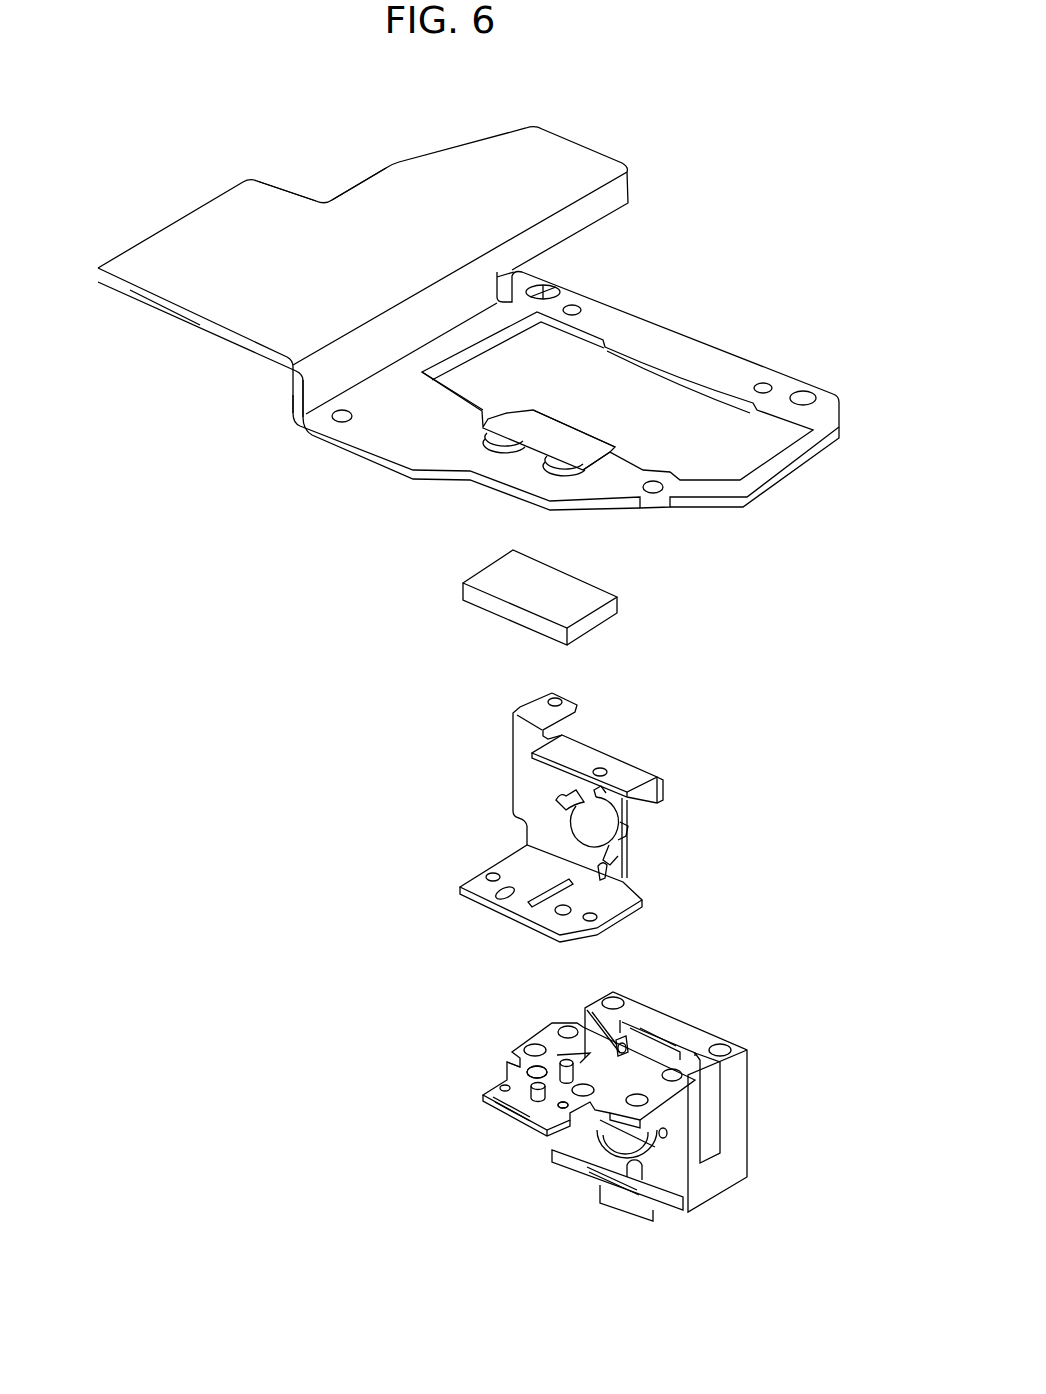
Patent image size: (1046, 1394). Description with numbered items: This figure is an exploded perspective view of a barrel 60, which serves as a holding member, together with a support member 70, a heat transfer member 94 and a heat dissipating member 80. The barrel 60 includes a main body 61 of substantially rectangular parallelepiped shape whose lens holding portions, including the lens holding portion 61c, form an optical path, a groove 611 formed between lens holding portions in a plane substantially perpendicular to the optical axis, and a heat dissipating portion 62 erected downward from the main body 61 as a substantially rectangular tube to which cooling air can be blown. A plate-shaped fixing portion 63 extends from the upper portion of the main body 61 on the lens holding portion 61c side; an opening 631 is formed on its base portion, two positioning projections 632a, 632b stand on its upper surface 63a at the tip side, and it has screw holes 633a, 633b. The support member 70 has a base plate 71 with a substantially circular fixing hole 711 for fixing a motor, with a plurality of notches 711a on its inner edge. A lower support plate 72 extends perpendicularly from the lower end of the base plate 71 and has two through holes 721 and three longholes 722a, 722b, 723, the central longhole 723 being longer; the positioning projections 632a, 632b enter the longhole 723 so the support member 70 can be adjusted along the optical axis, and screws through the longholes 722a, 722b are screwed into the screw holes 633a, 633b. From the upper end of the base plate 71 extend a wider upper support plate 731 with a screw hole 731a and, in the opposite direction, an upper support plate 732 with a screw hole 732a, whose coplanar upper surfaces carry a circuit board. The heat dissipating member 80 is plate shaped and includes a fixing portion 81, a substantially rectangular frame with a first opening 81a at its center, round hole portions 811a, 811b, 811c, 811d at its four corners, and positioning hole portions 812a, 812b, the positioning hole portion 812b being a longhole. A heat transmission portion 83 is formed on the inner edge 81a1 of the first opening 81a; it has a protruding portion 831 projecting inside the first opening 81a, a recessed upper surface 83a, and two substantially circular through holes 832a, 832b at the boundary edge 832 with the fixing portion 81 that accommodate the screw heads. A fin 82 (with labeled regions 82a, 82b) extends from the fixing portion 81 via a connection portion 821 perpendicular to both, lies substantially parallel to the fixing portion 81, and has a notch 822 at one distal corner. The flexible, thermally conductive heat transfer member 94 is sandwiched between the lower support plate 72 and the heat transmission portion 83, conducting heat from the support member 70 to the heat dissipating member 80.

The heat dissipating member 80 is at (262, 158).
The fin 82 is at (207, 323).
The plate surface 82a is at (160, 316).
The plate tab portion 82b is at (368, 197).
The notch 822 is at (312, 168).
The connection portion 821 is at (294, 388).
The round hole portion 811a is at (294, 392).
The fixing portion 81 is at (367, 447).
The first opening 81a is at (628, 378).
The inner edge 81a1 is at (453, 395).
The round hole portion 811b is at (655, 495).
The round hole portion 811c is at (765, 385).
The round hole portion 811d is at (580, 305).
The positioning hole 812a is at (808, 393).
The positioning hole portion 812b is at (562, 290).
The heat transmission portion 83 is at (580, 432).
The upper surface 83a is at (553, 420).
The protruding portion 831 is at (640, 452).
The boundary edge 832 is at (503, 462).
The first notch 832a is at (530, 450).
The through hole 832b is at (560, 463).
The heat transfer member 94 is at (447, 605).
The support member 70 is at (393, 757).
The base plate 71 is at (518, 768).
The fixing hole 711 is at (628, 835).
The notches 711a is at (555, 798).
The upper support plate 731 is at (530, 748).
The screw hole 731a is at (600, 772).
The upper support plate 732 is at (540, 698).
The screw hole 732a is at (563, 700).
The lower support plate 72 is at (462, 885).
The through holes 721 is at (492, 872).
The longhole 722a is at (498, 890).
The longhole 722b is at (565, 920).
The central longhole 723 is at (550, 895).
The barrel 60 is at (385, 1027).
The main body 61 is at (737, 1163).
The groove 611 is at (710, 1157).
The lens holding portion 61c is at (607, 1142).
The heat dissipating portion 62 is at (620, 1210).
The fixing portion 63 is at (527, 1040).
The upper surface 63a is at (540, 1108).
The opening 631 is at (570, 1052).
The positioning projection 632a is at (512, 1052).
The positioning projection 632b is at (527, 1085).
The screw hole 633a is at (535, 1092).
The screw hole 633b is at (563, 1110).